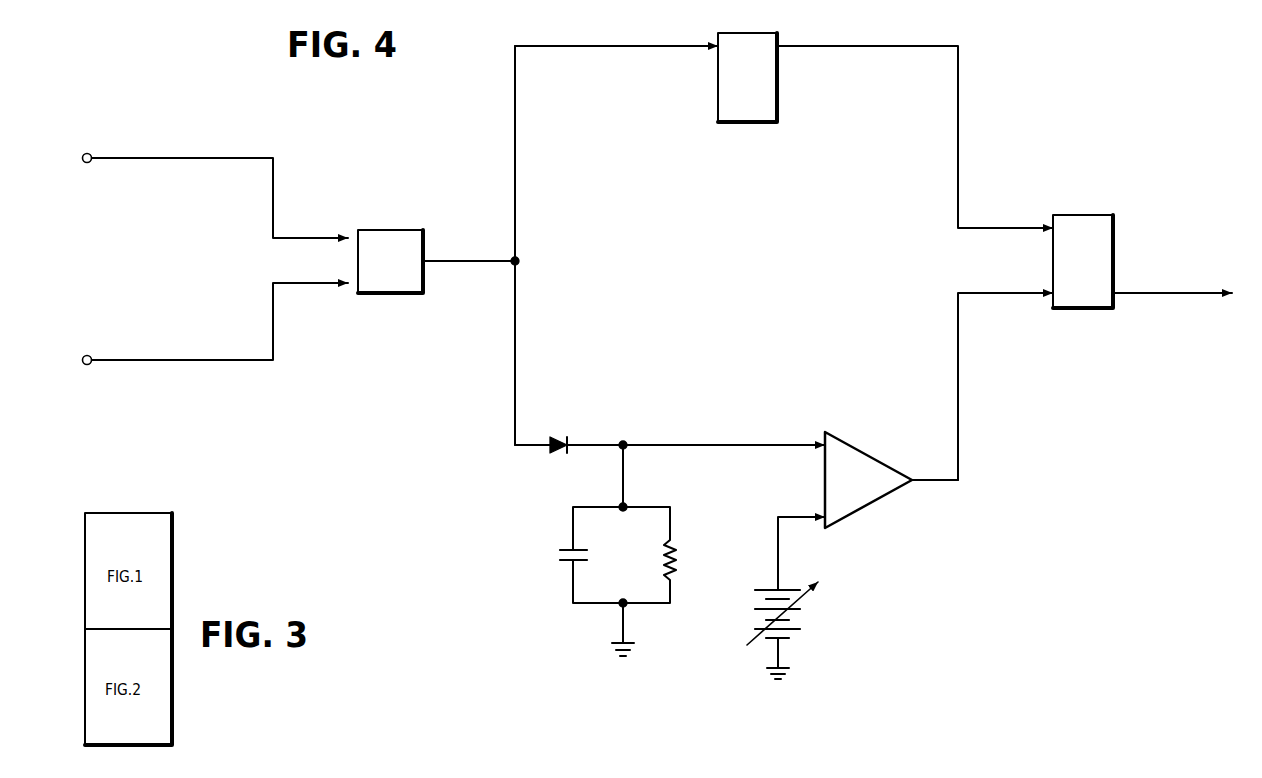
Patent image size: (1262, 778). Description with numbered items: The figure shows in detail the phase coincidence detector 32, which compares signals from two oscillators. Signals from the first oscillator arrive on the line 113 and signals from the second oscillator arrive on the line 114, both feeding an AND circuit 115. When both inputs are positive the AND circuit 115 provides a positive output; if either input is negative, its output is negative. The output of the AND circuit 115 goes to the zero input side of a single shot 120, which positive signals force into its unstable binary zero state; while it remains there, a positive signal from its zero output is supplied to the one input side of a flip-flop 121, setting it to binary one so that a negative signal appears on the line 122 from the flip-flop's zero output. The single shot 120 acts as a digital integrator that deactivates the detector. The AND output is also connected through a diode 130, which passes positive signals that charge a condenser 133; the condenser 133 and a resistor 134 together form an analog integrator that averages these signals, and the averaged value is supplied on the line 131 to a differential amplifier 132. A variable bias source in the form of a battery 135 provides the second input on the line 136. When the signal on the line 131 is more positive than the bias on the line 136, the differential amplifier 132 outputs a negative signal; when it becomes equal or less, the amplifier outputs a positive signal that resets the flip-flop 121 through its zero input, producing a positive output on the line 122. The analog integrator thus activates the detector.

The phase coincidence detector 32 is at (741, 258).
The line 113 is at (176, 160).
The line 114 is at (176, 362).
The AND circuit 115 is at (393, 230).
The single shot 120 is at (745, 122).
The flip-flop 121 is at (1113, 262).
The line 122 is at (1150, 293).
The diode 130 is at (558, 437).
The line 131 is at (718, 445).
The differential amplifier 132 is at (870, 452).
The condenser 133 is at (567, 548).
The resistor 134 is at (683, 549).
The battery 135 is at (800, 628).
The line 136 is at (777, 521).